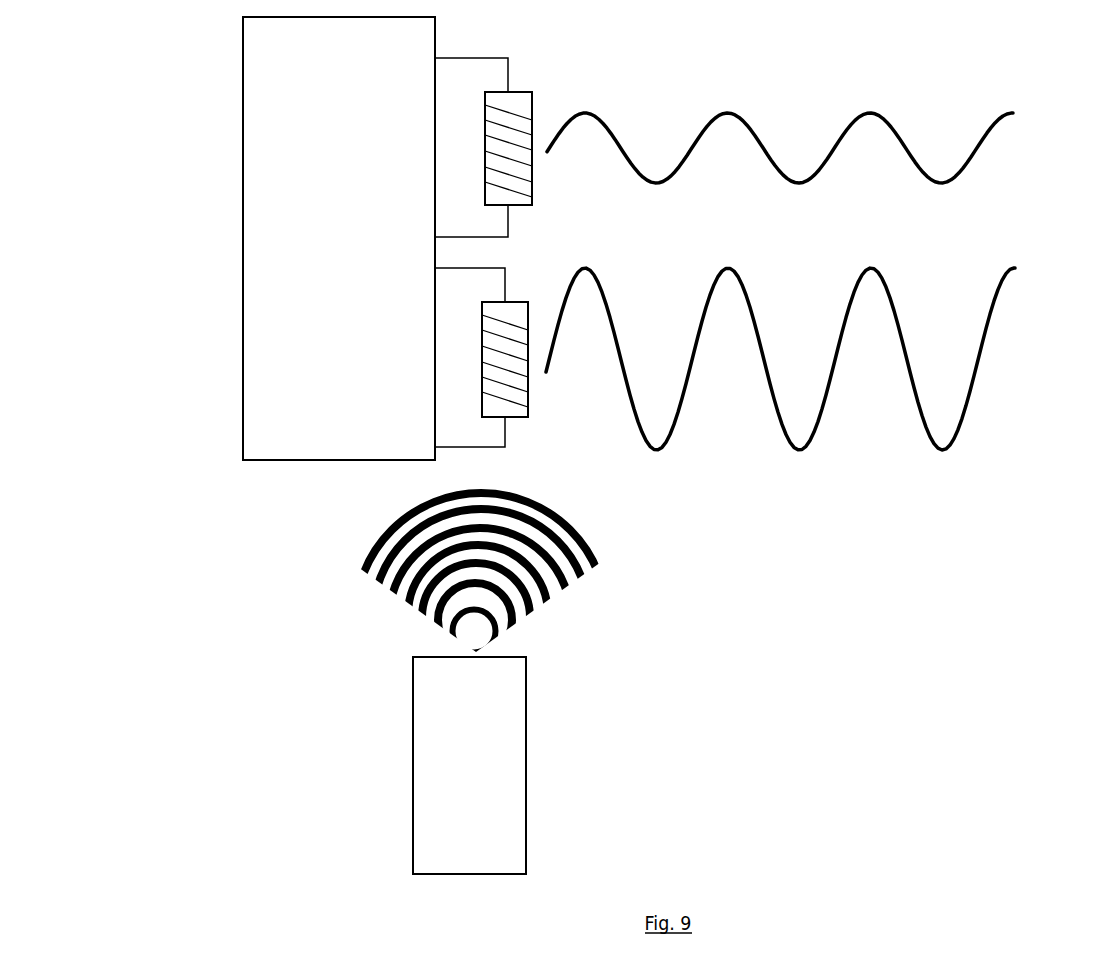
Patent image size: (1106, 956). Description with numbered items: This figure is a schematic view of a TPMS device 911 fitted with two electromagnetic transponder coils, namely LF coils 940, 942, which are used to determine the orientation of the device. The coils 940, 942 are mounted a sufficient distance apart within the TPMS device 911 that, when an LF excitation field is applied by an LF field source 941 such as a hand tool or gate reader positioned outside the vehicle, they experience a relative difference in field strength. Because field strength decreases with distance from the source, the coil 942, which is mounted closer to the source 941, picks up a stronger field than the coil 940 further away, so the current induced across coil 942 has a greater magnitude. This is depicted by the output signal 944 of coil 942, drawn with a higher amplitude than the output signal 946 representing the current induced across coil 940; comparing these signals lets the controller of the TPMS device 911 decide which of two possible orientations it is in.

The TPMS device 911 is at (339, 238).
The LF coil 940 is at (483, 147).
The LF coil 942 is at (481, 357).
The output signal 946 is at (804, 147).
The output signal 944 is at (803, 353).
The LF field source 941 is at (481, 683).